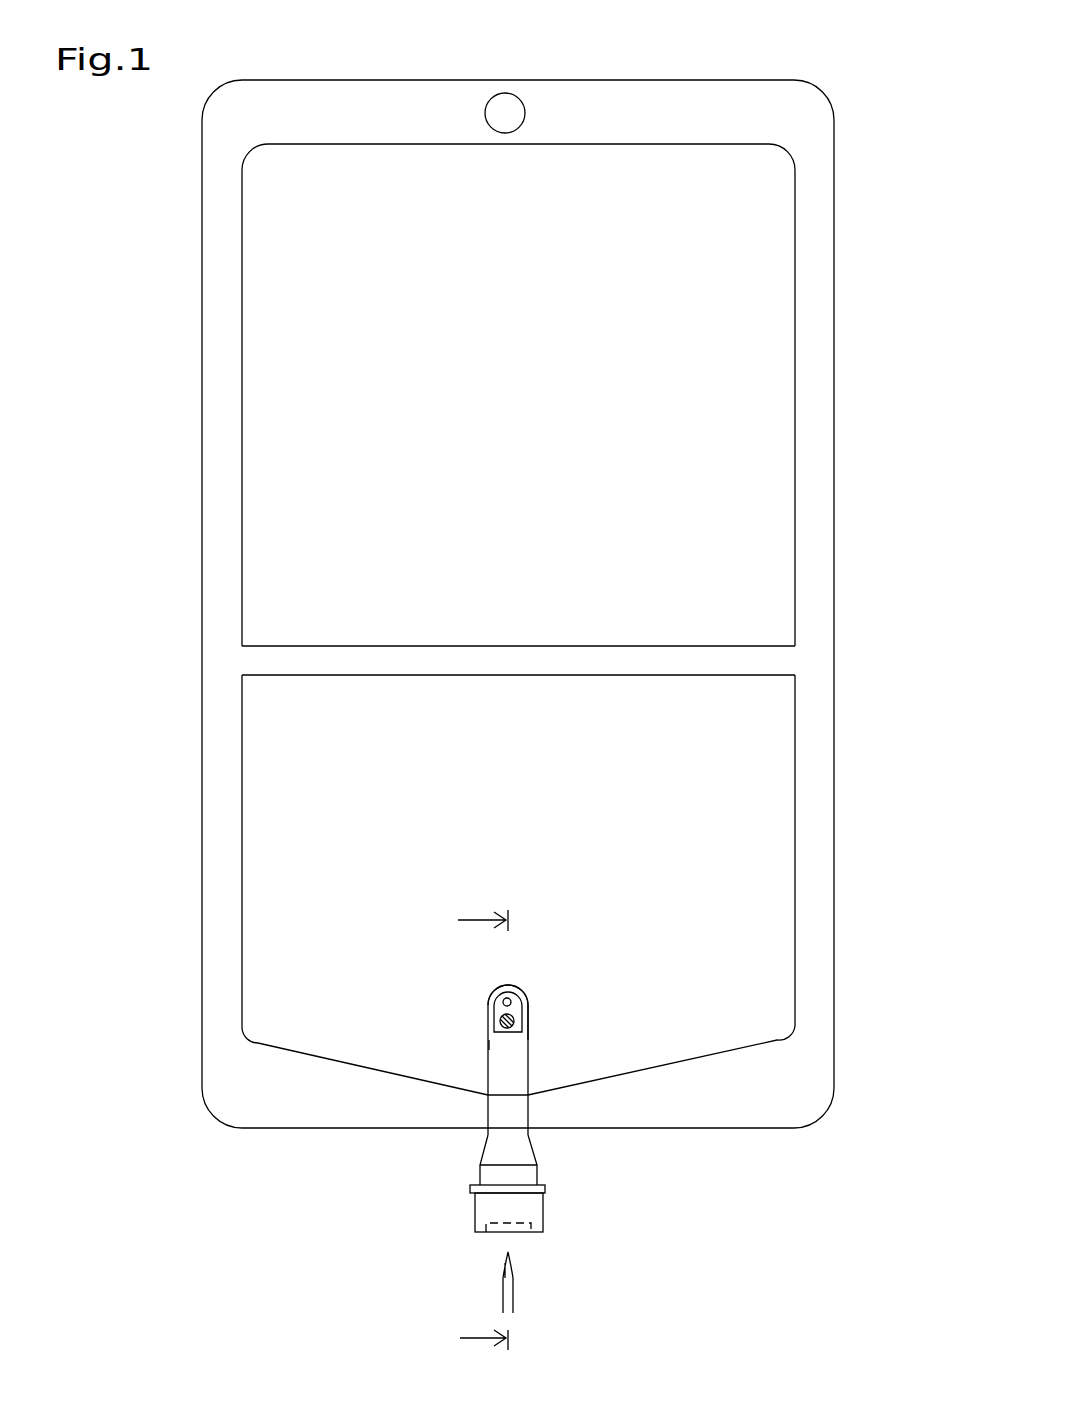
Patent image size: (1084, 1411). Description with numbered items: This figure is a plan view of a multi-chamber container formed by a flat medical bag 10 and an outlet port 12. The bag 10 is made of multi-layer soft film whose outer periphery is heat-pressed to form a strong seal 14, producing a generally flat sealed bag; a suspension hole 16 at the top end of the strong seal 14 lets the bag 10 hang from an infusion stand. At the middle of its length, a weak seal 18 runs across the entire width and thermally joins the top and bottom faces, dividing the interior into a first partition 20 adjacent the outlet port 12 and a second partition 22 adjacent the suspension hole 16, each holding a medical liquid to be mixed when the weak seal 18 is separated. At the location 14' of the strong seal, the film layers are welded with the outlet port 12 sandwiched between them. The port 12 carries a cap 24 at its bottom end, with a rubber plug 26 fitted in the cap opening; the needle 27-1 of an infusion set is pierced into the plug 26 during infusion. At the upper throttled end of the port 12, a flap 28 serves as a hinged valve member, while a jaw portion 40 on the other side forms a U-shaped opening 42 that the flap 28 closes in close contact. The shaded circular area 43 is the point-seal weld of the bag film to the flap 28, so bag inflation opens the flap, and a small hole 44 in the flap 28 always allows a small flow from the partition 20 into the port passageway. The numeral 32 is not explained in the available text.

The medical bag 10 is at (847, 762).
The outlet port 12 is at (488, 1137).
The strong seal 14 is at (581, 604).
The strong seal location at the outlet port 14' is at (558, 1138).
The suspension hole 16 is at (508, 100).
The weak seal 18 is at (627, 653).
The first partition 20 is at (525, 829).
The second partition 22 is at (526, 436).
The cap 24 is at (539, 1207).
The rubber plug 26 is at (497, 1239).
The needle 27-1 is at (514, 1285).
The flap 28 is at (499, 1013).
The port channel 32 is at (489, 1048).
The jaw portion 40 is at (529, 1027).
The U-shaped opening 42 is at (515, 1021).
The welded portion 43 is at (509, 1005).
The small hole 44 is at (489, 1004).